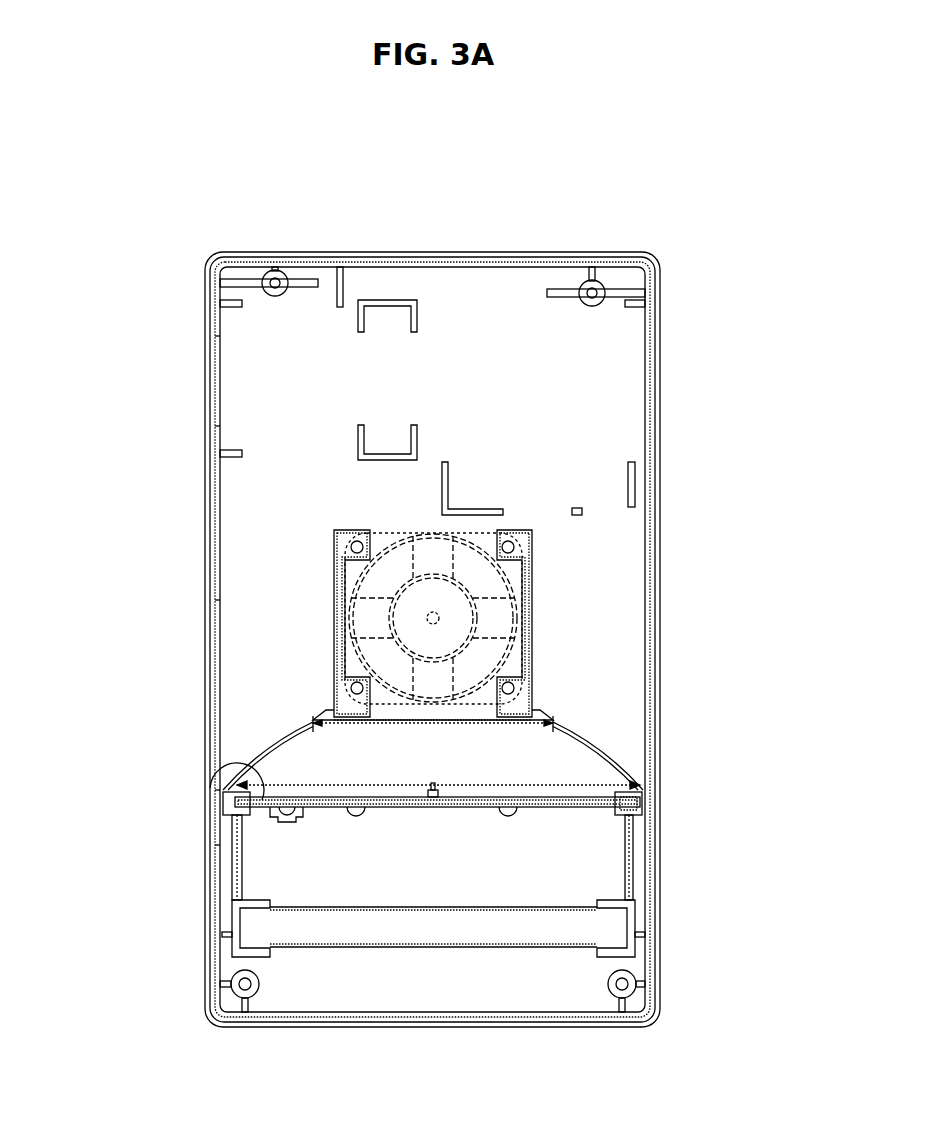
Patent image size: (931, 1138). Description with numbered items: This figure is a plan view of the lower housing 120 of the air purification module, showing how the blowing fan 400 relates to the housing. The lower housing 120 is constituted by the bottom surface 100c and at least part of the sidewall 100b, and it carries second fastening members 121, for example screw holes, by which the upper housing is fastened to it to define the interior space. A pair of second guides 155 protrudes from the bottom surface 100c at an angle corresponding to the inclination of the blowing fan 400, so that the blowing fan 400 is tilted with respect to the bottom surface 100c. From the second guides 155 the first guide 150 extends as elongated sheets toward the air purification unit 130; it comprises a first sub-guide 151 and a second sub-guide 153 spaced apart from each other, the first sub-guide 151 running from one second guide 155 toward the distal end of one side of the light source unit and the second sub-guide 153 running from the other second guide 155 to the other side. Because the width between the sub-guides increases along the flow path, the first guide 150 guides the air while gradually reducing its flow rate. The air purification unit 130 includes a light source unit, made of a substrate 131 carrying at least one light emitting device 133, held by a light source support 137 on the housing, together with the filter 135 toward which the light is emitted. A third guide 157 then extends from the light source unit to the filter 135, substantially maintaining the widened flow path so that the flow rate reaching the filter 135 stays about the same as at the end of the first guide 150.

The lower housing 120 is at (186, 182).
The bottom surface 100c is at (243, 529).
The sidewall 100b is at (205, 723).
The second guide 155 is at (338, 625).
The blowing fan 400 is at (520, 612).
The first guide 150 is at (783, 697).
The first sub-guide 151 is at (557, 717).
The second sub-guide 153 is at (287, 730).
The air purification unit 130 is at (87, 772).
The substrate 131 is at (233, 762).
The light emitting device 133 is at (355, 818).
The filter 135 is at (265, 923).
The light source support 137 is at (648, 805).
The third guide 157 is at (640, 860).
The second fastening member 121 is at (233, 977).